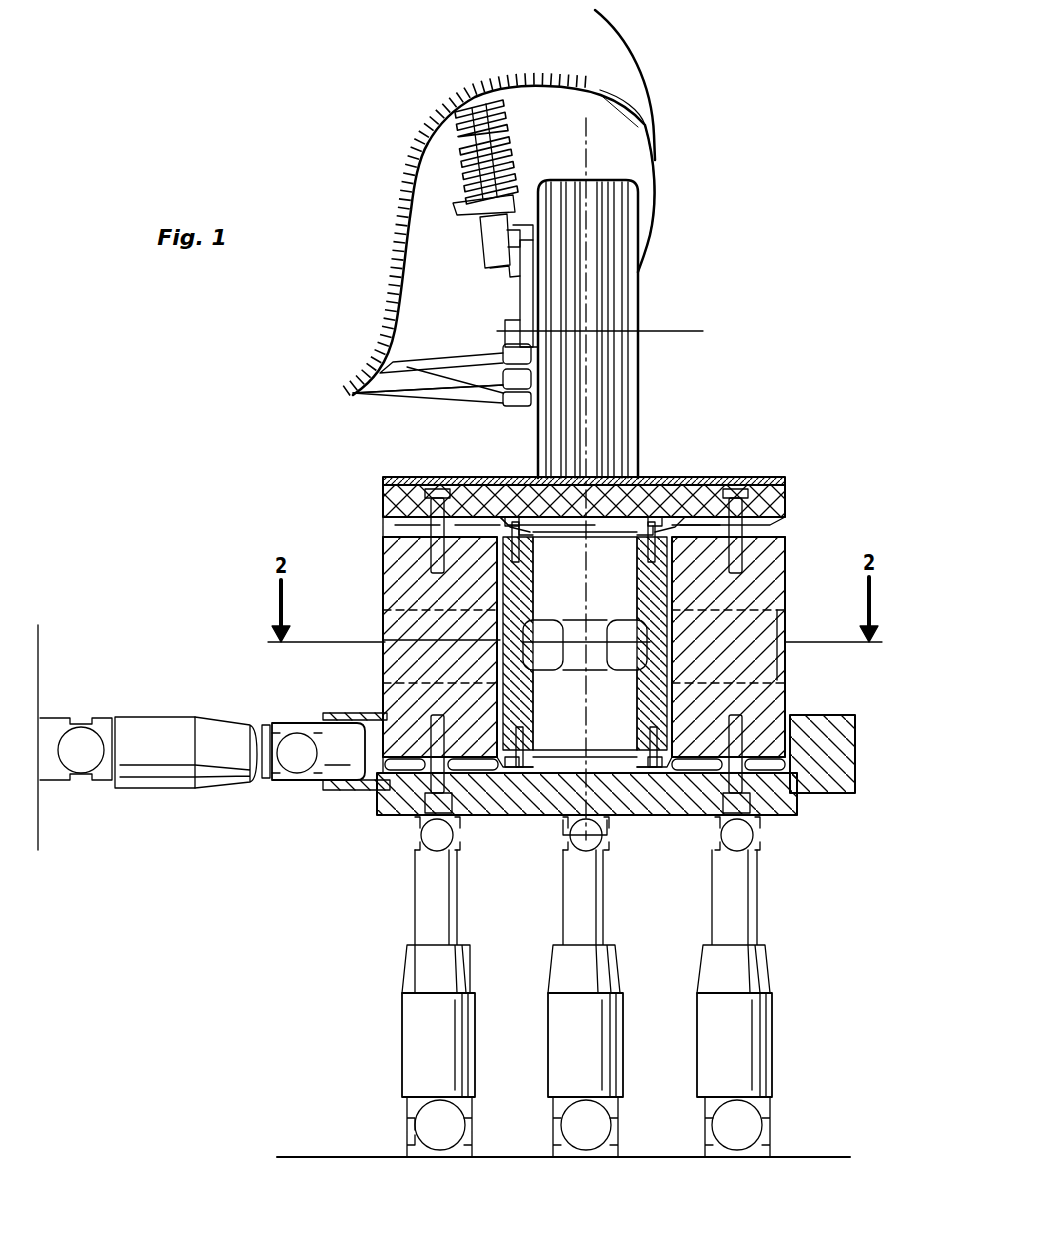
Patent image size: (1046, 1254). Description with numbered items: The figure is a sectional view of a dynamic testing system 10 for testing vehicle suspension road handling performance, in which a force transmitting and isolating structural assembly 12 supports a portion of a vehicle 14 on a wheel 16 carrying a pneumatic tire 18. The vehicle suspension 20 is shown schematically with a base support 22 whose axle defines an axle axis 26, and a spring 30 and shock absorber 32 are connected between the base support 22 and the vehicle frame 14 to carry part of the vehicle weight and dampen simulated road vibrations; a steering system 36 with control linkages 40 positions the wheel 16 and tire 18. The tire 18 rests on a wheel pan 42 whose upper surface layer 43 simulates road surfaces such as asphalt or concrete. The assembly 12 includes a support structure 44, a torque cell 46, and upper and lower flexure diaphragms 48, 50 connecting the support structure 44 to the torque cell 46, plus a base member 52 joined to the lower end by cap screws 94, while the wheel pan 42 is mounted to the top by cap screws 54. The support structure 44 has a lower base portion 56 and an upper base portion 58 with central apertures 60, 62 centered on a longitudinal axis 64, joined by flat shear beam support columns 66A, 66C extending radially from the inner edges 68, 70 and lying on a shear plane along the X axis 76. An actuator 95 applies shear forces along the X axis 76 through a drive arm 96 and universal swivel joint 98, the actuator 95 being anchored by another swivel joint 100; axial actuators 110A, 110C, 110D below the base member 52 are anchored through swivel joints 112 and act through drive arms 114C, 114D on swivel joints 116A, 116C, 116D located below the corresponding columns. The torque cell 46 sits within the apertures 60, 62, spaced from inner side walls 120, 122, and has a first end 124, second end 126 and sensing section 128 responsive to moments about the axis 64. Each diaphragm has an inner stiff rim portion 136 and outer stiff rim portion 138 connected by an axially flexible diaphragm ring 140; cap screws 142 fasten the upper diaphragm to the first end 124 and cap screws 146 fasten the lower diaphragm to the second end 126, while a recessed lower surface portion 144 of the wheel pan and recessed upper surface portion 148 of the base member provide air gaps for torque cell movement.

The dynamic testing system 10 is at (826, 510).
The force transmitting and isolating structural assembly 12 is at (806, 610).
The vehicle 14 is at (680, 98).
The wheel 16 is at (664, 222).
The pneumatic tire 18 is at (640, 362).
The vehicle suspension 20 is at (530, 127).
The base support 22 is at (517, 287).
The axle axis 26 is at (680, 331).
The spring 30 is at (462, 150).
The shock absorber 32 is at (480, 228).
The steering system 36 is at (425, 342).
The control linkages 40 is at (446, 355).
The wheel pan 42 is at (802, 500).
The upper surface layer 43 is at (785, 478).
The support structure 44 is at (375, 556).
The torque cell 46 is at (395, 683).
The upper flexure diaphragm 48 is at (383, 530).
The lower flexure diaphragm 50 is at (380, 790).
The base member 52 is at (795, 805).
The cap screws 54 is at (395, 477).
The lower base portion 56 is at (836, 720).
The upper base portion 58 is at (790, 545).
The central aperture 60 is at (492, 790).
The central aperture 62 is at (476, 500).
The longitudinal axis 64 is at (547, 930).
The support column 66A is at (520, 650).
The support column 66C is at (760, 672).
The inner edge 68 is at (786, 690).
The inner edge 70 is at (760, 625).
The X axis 76 is at (790, 650).
The cap screws 94 is at (385, 790).
The actuator 95 is at (162, 715).
The drive arm 96 is at (265, 728).
The universal swivel joint 98 is at (330, 723).
The universal swivel joint 100 is at (83, 715).
The axial actuator 110A is at (400, 1035).
The axial actuator 110C is at (696, 1040).
The axial actuator 110D is at (546, 1038).
The universal swivel joints 112 is at (398, 1122).
The drive arm 114C is at (410, 950).
The drive arm 114D is at (555, 905).
The universal swivel joint 116A is at (420, 850).
The universal swivel joint 116C is at (714, 870).
The universal swivel joint 116D is at (562, 855).
The inner side wall 120 is at (430, 800).
The inner side wall 122 is at (500, 510).
The first end 124 is at (500, 580).
The second end 126 is at (355, 800).
The sensing section 128 is at (500, 618).
The inner stiff rim portion 136 is at (512, 512).
The outer stiff rim portion 138 is at (440, 500).
The flexible diaphragm ring 140 is at (437, 487).
The cap screws 142 is at (520, 517).
The lower surface portion 144 is at (627, 500).
The cap screws 146 is at (512, 790).
The upper surface portion 148 is at (550, 775).